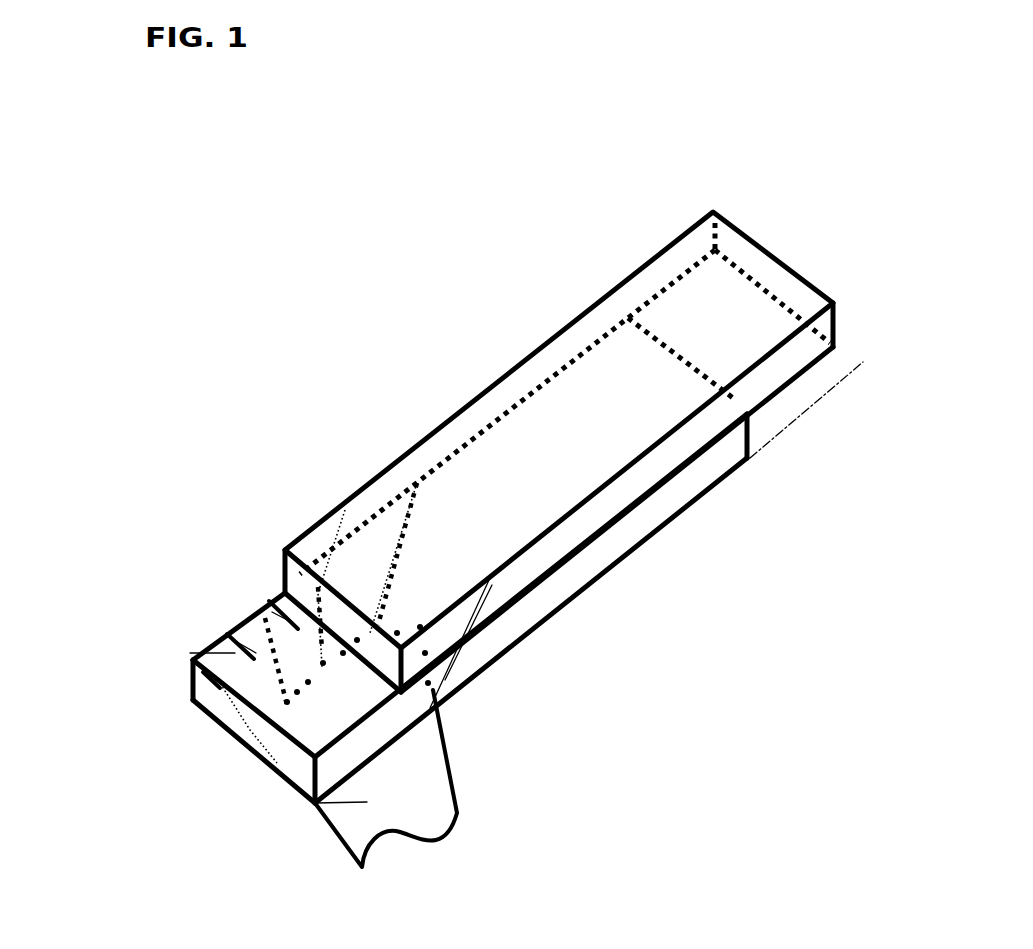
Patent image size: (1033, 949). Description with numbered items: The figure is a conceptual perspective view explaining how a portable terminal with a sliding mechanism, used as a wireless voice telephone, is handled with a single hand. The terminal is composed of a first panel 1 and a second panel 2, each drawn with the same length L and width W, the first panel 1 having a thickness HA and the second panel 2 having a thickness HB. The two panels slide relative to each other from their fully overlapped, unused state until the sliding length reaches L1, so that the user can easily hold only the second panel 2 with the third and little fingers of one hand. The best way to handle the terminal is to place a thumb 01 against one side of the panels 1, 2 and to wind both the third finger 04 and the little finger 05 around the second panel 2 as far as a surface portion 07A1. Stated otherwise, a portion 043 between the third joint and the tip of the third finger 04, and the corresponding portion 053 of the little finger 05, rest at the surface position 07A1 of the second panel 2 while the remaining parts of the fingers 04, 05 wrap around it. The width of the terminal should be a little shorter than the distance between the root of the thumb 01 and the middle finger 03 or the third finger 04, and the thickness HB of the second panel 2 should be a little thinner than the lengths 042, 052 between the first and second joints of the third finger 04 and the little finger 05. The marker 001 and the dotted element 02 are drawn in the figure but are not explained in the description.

The first panel 1 is at (683, 450).
The second panel 2 is at (603, 552).
The thumb 01 is at (463, 640).
The optical waveguide core 02 is at (408, 507).
The middle finger 03 is at (317, 545).
The third finger 04 is at (246, 690).
The little finger 05 is at (240, 703).
The length between first and second joint of third finger 042 is at (265, 625).
The portion between third joint and tip of third finger 043 is at (280, 605).
The length between first and second joint of little finger 052 is at (190, 653).
The portion between third joint and tip of little finger 053 is at (192, 665).
The front corner edge 001 is at (315, 803).
The surface portion of second panel 07A1 is at (327, 698).
The length L is at (702, 199).
The width W is at (728, 198).
The thickness of first panel HA is at (860, 372).
The thickness of second panel HB is at (852, 347).
The sliding length L1 is at (280, 587).